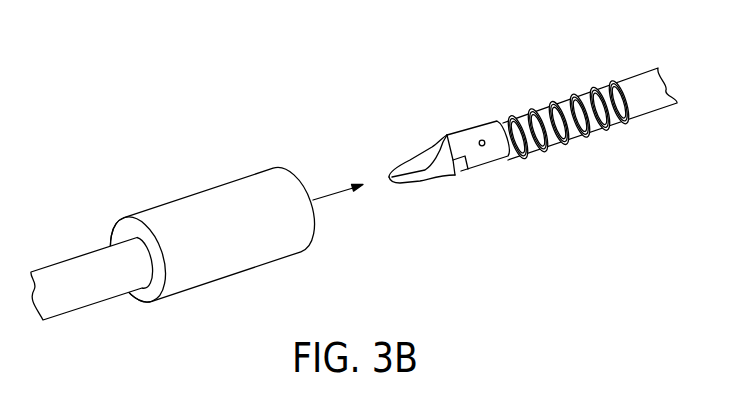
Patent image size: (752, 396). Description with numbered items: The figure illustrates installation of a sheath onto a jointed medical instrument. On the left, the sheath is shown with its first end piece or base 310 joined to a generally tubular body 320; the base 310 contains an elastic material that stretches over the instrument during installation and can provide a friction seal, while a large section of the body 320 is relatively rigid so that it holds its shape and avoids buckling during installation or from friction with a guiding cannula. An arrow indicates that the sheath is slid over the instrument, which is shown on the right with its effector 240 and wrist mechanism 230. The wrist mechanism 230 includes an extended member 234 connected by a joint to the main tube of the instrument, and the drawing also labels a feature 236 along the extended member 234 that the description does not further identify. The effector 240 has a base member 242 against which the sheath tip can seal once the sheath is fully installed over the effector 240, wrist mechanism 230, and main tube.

The wrist mechanism 230 is at (543, 125).
The extended member 234 is at (658, 105).
The coil spring rings 236 is at (561, 136).
The effector 240 is at (447, 175).
The base member 242 is at (488, 136).
The base 310 is at (235, 192).
The tubular body 320 is at (72, 255).